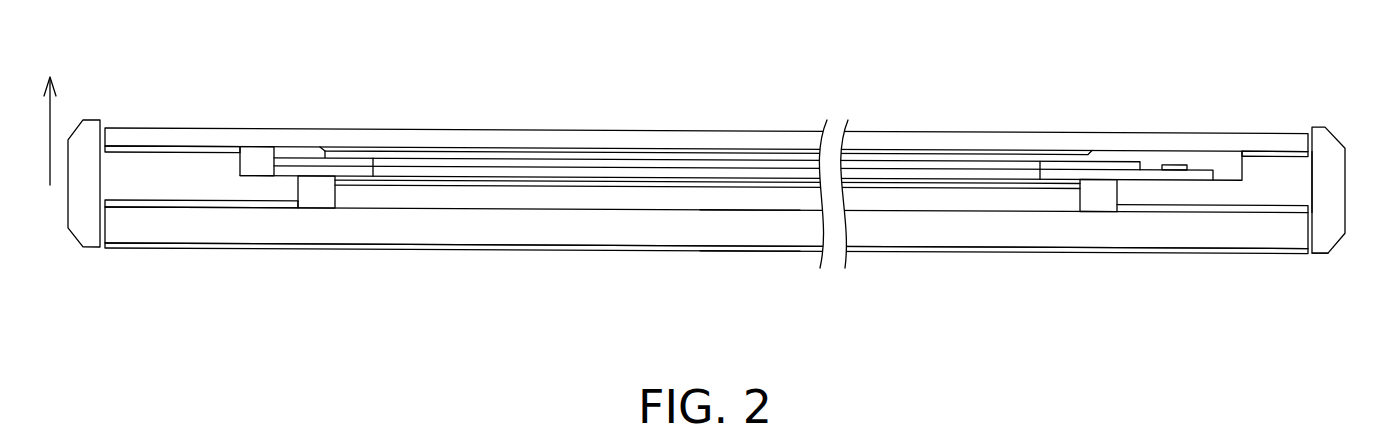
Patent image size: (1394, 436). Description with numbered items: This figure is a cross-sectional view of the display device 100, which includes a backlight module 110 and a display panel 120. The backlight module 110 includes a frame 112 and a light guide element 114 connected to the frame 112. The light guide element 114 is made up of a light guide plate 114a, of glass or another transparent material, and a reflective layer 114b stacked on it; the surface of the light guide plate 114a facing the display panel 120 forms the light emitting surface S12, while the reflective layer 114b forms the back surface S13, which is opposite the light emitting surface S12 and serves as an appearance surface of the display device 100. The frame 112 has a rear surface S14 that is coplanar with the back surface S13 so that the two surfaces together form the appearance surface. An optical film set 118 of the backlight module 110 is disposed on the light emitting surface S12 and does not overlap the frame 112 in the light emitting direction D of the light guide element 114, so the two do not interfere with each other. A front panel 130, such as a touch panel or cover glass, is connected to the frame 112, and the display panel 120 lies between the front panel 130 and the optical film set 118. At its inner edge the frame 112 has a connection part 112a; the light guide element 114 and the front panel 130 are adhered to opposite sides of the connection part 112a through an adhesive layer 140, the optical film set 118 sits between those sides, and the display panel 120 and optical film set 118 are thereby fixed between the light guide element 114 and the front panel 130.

The display device 100 is at (1307, 42).
The backlight module 110 is at (719, 211).
The frame 112 is at (1328, 142).
The connection part 112a is at (1242, 192).
The light guide element 114 is at (706, 281).
The light guide plate 114a is at (447, 233).
The reflective layer 114b is at (517, 247).
The optical film set 118 is at (504, 192).
The display panel 120 is at (977, 165).
The front panel 130 is at (667, 140).
The adhesive layer 140 is at (218, 204).
The light emitting surface S12 is at (748, 208).
The back surface S13 is at (750, 250).
The rear surface S14 is at (1323, 255).
The light emitting direction D is at (50, 112).